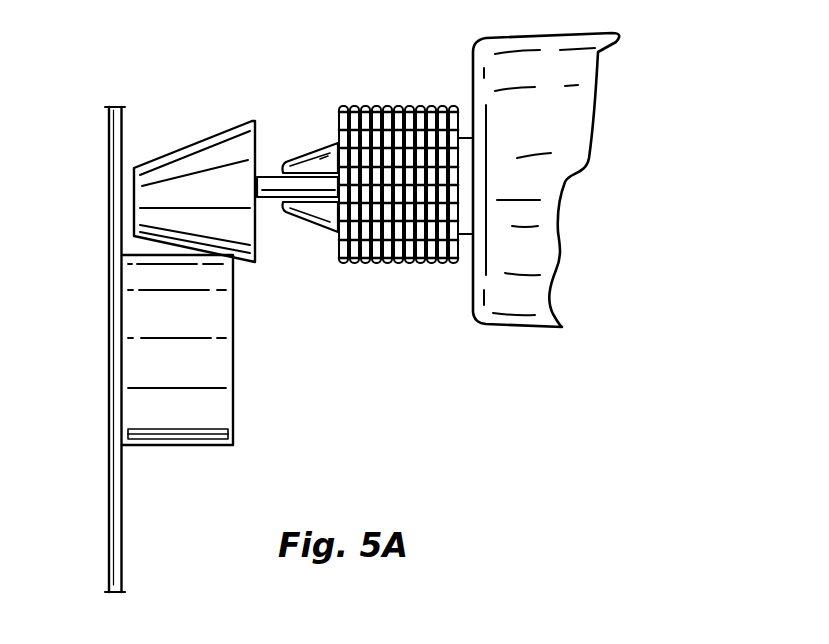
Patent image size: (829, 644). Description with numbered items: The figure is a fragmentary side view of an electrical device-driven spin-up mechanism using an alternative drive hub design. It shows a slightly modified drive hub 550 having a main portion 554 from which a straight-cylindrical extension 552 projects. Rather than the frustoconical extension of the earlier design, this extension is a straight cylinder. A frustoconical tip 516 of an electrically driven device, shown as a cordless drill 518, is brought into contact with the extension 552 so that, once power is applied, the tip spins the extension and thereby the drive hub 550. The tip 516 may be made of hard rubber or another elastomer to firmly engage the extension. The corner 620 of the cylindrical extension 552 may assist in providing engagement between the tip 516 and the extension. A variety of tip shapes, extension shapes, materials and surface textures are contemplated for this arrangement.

The drive hub 550 is at (90, 87).
The main portion 554 is at (124, 107).
The frustoconical tip 516 is at (246, 121).
The cordless drill 518 is at (563, 38).
The straight-cylindrical extension 552 is at (198, 400).
The corner 620 is at (205, 450).